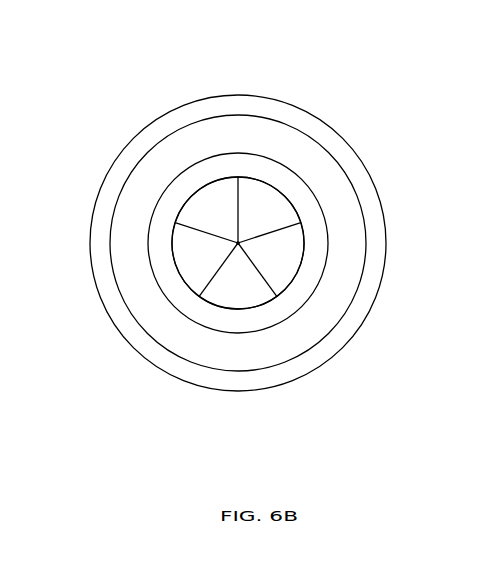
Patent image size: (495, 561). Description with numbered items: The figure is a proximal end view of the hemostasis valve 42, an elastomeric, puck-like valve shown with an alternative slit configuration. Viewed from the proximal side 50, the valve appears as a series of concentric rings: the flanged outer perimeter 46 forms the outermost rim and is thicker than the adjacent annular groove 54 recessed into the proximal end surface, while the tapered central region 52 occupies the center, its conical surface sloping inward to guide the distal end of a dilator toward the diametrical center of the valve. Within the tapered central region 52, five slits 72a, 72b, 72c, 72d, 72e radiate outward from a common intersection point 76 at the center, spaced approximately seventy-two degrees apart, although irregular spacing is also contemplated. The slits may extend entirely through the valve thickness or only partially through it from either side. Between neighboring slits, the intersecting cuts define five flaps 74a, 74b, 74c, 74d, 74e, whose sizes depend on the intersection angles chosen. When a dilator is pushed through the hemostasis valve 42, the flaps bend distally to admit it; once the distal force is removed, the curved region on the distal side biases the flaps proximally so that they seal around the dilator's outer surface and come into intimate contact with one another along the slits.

The hemostasis valve 42 is at (350, 56).
The flanged outer perimeter 46 is at (367, 193).
The proximal side 50 is at (127, 357).
The tapered central region 52 is at (255, 193).
The annular groove 54 is at (343, 258).
The intersection point 76 is at (238, 243).
The slit 72a is at (272, 276).
The slit 72b is at (282, 231).
The slit 72c is at (238, 180).
The slit 72d is at (183, 226).
The slit 72e is at (202, 299).
The flap 74a is at (278, 272).
The flap 74b is at (278, 208).
The flap 74c is at (208, 198).
The flap 74d is at (185, 250).
The flap 74e is at (236, 297).